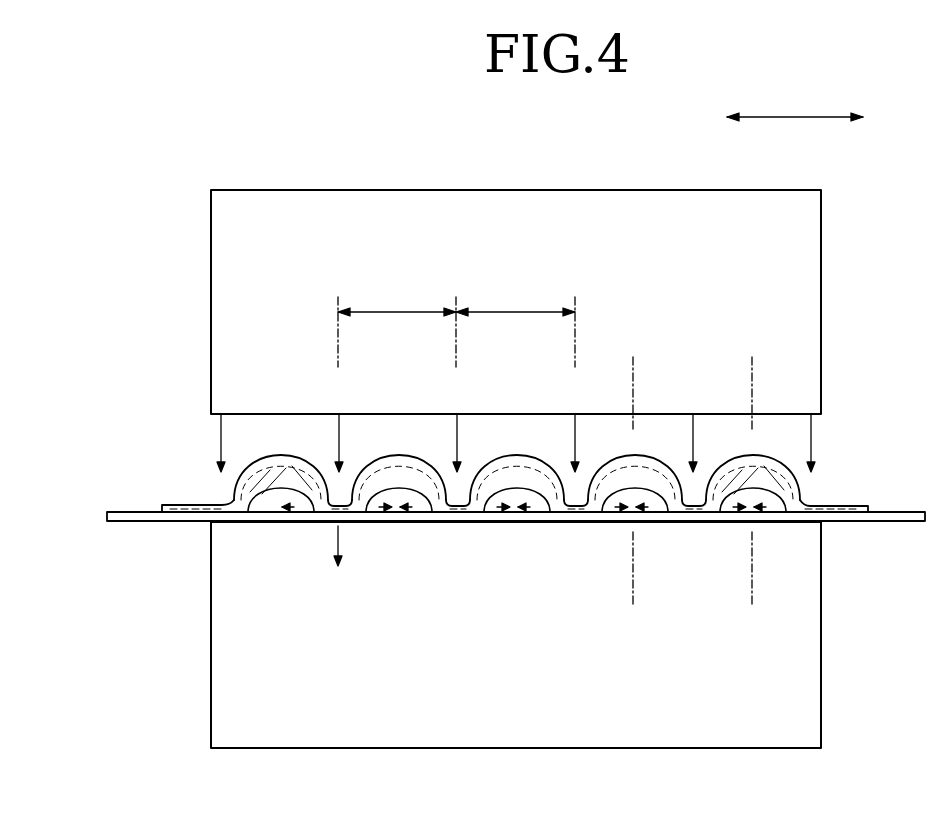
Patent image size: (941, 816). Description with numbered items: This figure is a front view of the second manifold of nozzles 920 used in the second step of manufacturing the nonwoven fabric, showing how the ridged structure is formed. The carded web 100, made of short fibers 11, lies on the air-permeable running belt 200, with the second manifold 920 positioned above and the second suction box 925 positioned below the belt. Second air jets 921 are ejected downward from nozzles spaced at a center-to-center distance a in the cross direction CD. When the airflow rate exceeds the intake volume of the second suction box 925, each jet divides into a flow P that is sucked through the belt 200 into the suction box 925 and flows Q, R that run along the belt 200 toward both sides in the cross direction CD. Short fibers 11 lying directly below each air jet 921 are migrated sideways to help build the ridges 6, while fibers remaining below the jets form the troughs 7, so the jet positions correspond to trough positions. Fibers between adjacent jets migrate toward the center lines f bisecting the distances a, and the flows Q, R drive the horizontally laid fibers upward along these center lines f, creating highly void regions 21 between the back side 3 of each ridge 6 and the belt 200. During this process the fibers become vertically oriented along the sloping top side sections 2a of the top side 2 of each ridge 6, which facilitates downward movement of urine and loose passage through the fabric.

The second manifold of nozzles 920 is at (822, 244).
The second suction box 925 is at (823, 618).
The second air jets 921 is at (219, 430).
The running belt 200 is at (126, 510).
The carded web 100 is at (189, 502).
The top side 2 is at (757, 459).
The sloping top side sections 2a is at (795, 471).
The back side 3 is at (770, 505).
The ridges 6 is at (272, 461).
The troughs 7 is at (460, 490).
The short fibers 11 is at (258, 490).
The highly void regions 21 is at (275, 505).
The center-to-center distance a is at (391, 311).
The center lines f is at (634, 372).
The flow sucked into second suction box P is at (343, 545).
The flow headed along the belt toward one side Q is at (293, 518).
The flow headed along the belt toward the other side R is at (376, 518).
The cross direction CD is at (791, 120).